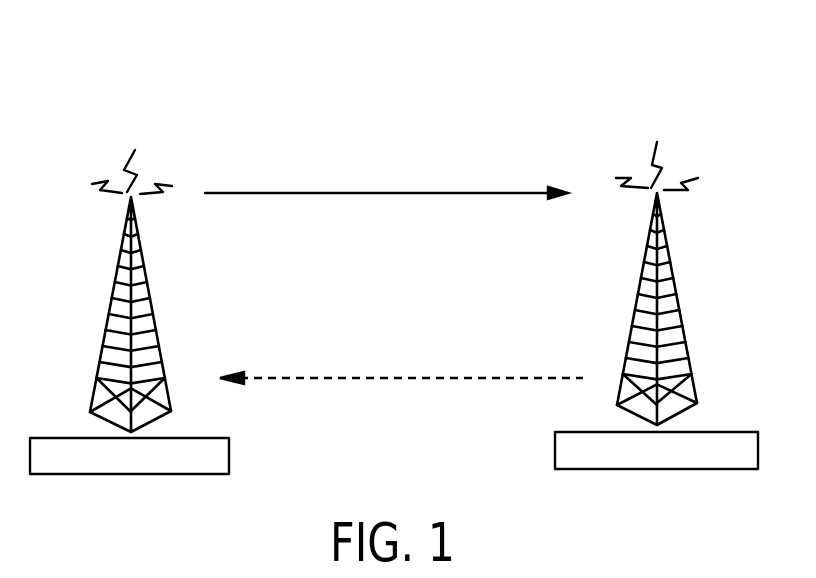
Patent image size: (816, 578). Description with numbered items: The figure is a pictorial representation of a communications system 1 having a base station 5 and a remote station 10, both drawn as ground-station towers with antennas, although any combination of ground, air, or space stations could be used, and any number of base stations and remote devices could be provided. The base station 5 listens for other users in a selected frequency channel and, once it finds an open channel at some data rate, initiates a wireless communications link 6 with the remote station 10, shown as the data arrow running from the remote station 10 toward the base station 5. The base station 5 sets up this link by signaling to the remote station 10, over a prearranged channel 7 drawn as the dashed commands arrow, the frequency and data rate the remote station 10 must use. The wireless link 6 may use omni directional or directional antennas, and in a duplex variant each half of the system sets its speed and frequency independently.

The communications system 1 is at (400, 95).
The base station 5 is at (679, 303).
The wireless communications link 6 is at (347, 191).
The prearranged channel 7 is at (373, 382).
The remote station 10 is at (112, 305).